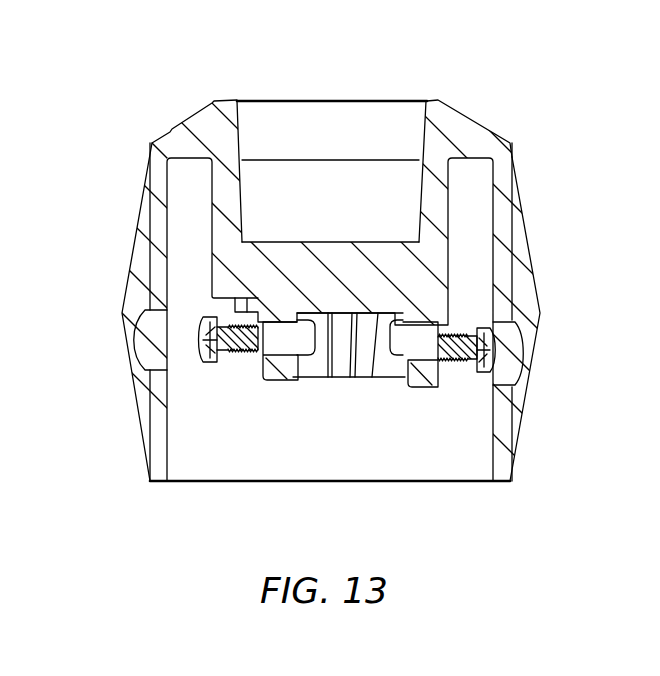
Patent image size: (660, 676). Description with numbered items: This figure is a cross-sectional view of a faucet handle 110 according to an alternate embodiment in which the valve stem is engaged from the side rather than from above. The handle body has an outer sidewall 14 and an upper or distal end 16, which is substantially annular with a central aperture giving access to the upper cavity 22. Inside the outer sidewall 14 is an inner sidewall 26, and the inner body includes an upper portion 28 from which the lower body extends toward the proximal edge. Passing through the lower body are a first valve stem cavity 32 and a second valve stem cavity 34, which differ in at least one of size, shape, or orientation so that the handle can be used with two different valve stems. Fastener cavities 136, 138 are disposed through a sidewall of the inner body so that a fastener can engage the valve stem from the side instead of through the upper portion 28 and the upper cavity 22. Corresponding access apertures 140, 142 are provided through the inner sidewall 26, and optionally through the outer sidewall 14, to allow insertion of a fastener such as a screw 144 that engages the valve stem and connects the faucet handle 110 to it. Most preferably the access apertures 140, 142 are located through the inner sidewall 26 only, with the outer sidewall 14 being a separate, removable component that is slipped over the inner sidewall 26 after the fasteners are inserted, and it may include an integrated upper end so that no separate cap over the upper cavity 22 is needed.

The cutting insert assembly 110 is at (183, 70).
The outer sidewall 14 is at (530, 243).
The upper or distal end 16 is at (475, 127).
The upper cavity 22 is at (342, 203).
The inner sidewall 26 is at (163, 443).
The upper portion of the inner body 28 is at (241, 268).
The first valve stem cavity 32 is at (310, 360).
The second valve stem cavity 34 is at (387, 365).
The fastener cavity 136 is at (278, 332).
The fastener cavity 138 is at (427, 333).
The access aperture 140 is at (148, 330).
The access aperture 142 is at (512, 357).
The screw 144 is at (200, 347).